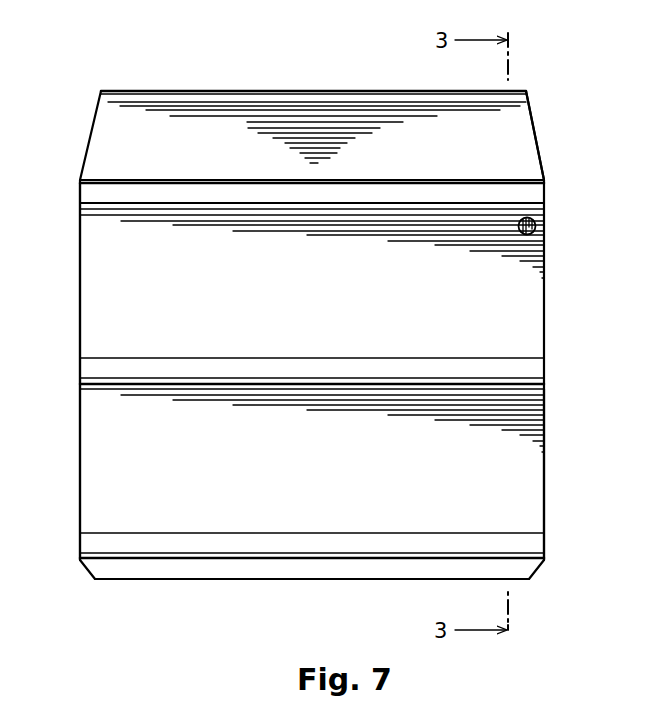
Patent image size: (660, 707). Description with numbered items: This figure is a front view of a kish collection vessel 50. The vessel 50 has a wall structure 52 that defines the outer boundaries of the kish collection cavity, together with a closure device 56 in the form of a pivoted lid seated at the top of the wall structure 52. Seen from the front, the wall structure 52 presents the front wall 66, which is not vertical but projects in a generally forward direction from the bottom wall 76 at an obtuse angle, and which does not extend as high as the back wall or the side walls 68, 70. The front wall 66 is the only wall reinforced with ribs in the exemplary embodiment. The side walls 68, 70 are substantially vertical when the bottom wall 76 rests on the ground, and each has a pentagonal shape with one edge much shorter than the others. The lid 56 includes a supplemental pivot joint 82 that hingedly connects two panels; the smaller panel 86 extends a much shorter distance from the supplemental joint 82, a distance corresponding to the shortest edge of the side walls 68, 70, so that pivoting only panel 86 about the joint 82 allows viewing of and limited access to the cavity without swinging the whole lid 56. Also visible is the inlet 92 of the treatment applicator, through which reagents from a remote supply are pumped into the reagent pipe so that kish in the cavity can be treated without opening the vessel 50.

The vessel 50 is at (339, 344).
The wall structure 52 is at (343, 411).
The closure device 56 is at (360, 95).
The front wall 66 is at (523, 478).
The side wall 68 is at (80, 258).
The side wall 70 is at (545, 398).
The bottom wall 76 is at (325, 553).
The supplemental pivot joint 82 is at (527, 91).
The panel 86 is at (517, 143).
The inlet 92 is at (537, 225).